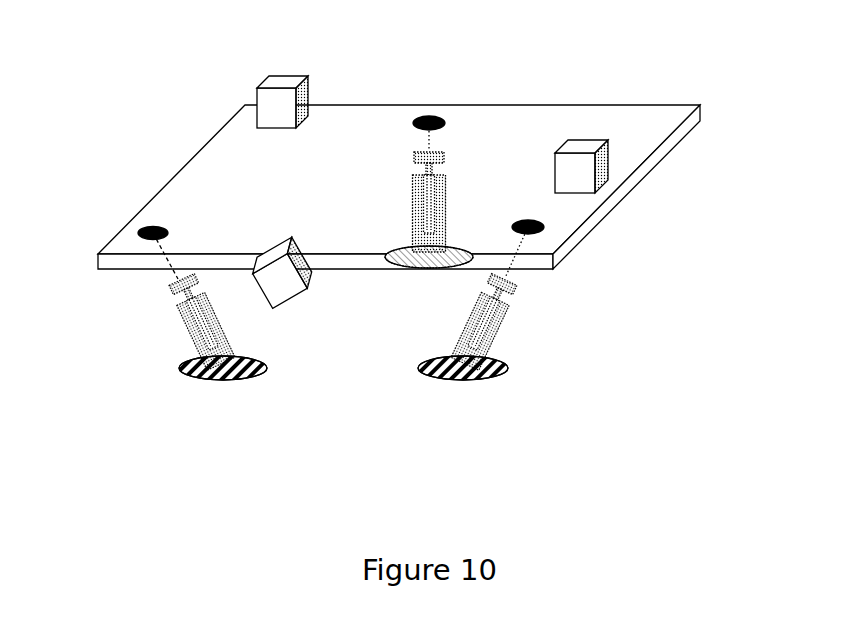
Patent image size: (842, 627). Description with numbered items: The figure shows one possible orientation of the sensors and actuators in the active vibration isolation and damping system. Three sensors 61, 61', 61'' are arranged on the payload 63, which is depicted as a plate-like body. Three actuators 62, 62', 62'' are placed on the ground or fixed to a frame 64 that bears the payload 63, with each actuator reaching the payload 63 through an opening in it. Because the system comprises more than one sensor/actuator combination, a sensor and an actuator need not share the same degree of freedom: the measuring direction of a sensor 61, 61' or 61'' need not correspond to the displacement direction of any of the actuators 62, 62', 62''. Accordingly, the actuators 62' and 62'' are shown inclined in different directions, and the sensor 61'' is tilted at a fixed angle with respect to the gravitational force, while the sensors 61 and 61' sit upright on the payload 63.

The sensor 61 is at (254, 71).
The sensor 61' is at (629, 180).
The sensor 61'' is at (303, 287).
The actuator 62 is at (396, 191).
The actuator 62' is at (168, 301).
The actuator 62'' is at (513, 300).
The payload 63 is at (92, 258).
The frame 64 is at (413, 285).